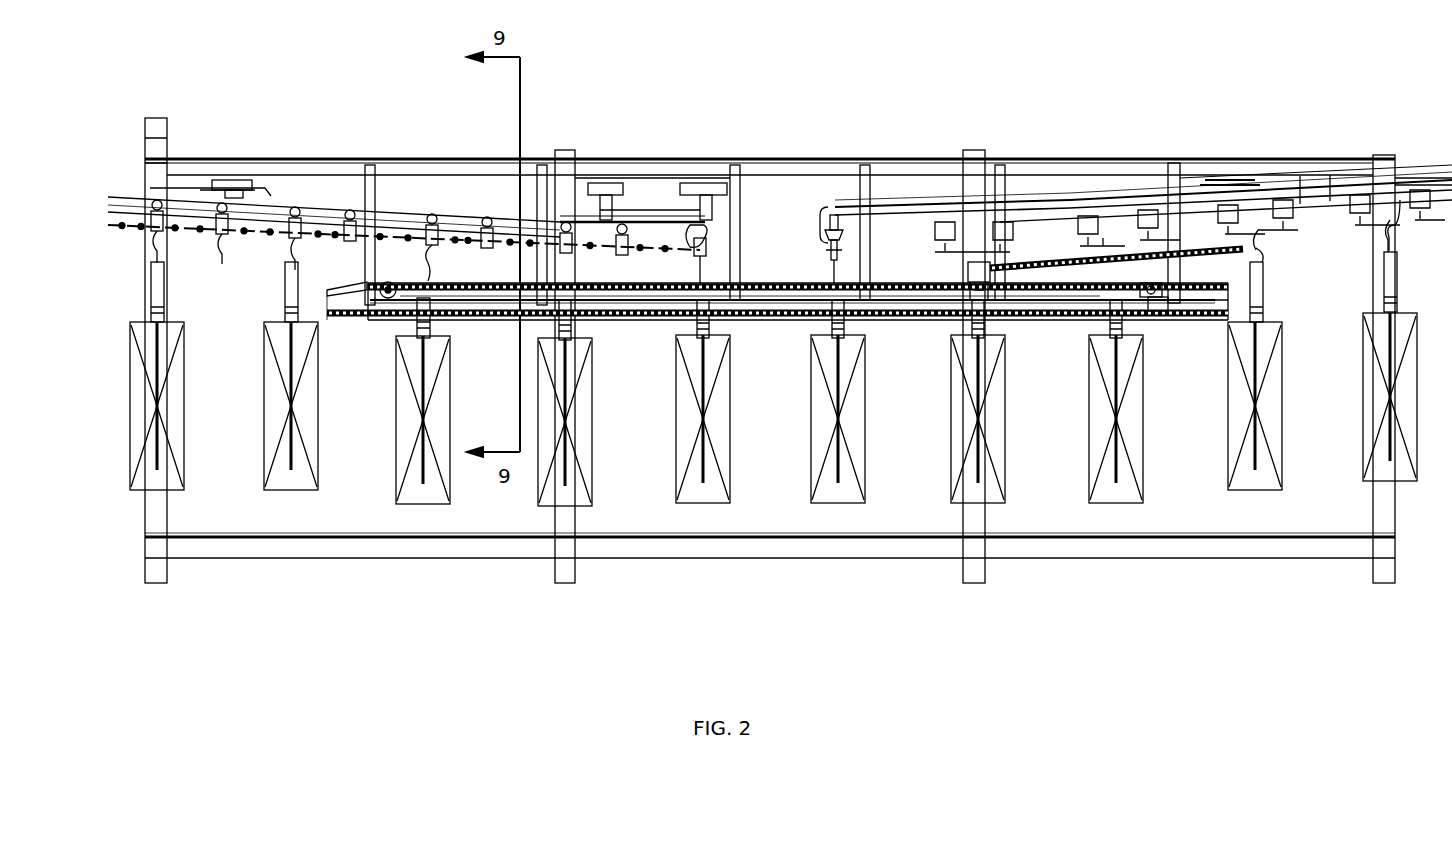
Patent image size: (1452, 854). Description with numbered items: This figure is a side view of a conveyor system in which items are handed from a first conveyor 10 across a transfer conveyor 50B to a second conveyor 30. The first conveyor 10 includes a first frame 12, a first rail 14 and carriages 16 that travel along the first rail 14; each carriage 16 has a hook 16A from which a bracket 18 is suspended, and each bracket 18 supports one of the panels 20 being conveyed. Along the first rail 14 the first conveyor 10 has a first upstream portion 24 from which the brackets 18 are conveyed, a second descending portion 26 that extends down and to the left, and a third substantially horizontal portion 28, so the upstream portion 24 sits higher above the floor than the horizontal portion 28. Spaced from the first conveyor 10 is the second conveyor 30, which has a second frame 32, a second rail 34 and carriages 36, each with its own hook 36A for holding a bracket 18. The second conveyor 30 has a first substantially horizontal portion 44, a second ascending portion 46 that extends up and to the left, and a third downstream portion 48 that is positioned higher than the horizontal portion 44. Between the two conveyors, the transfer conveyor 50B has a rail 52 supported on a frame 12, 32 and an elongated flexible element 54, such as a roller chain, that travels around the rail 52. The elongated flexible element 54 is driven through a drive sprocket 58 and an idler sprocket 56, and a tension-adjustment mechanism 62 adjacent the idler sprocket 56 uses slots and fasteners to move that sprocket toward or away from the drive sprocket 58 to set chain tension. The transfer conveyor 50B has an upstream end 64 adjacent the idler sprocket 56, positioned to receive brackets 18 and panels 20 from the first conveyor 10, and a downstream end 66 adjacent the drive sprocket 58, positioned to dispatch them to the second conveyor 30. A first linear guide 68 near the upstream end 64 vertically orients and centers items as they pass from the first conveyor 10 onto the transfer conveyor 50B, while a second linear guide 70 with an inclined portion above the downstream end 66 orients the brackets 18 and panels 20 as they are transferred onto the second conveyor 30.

The first conveyor 10 is at (1270, 130).
The first frame 12 is at (1362, 512).
The first rail 14 is at (1120, 192).
The carriages 16 is at (1288, 240).
The hook 16A is at (1266, 262).
The bracket 18 is at (287, 296).
The panels 20 is at (270, 413).
The first upstream portion 24 is at (1399, 137).
The second descending portion 26 is at (1183, 134).
The third substantially horizontal portion 28 is at (914, 159).
The second conveyor 30 is at (308, 148).
The second frame 32 is at (165, 509).
The second rail 34 is at (380, 214).
The carriages 36 is at (277, 240).
The hook 36A is at (436, 262).
The first substantially horizontal portion 44 is at (658, 154).
The second ascending portion 46 is at (485, 209).
The third downstream portion 48 is at (195, 160).
The transfer conveyor 50B is at (766, 270).
The rail 52 is at (779, 302).
The elongated flexible element 54 is at (906, 302).
The sprocket 56 is at (1150, 312).
The sprocket 58 is at (382, 282).
The tension-adjustment mechanism 62 is at (1158, 322).
The upstream end 64 is at (1070, 326).
The downstream end 66 is at (470, 332).
The first linear guide 68 is at (1206, 258).
The second linear guide 70 is at (343, 285).